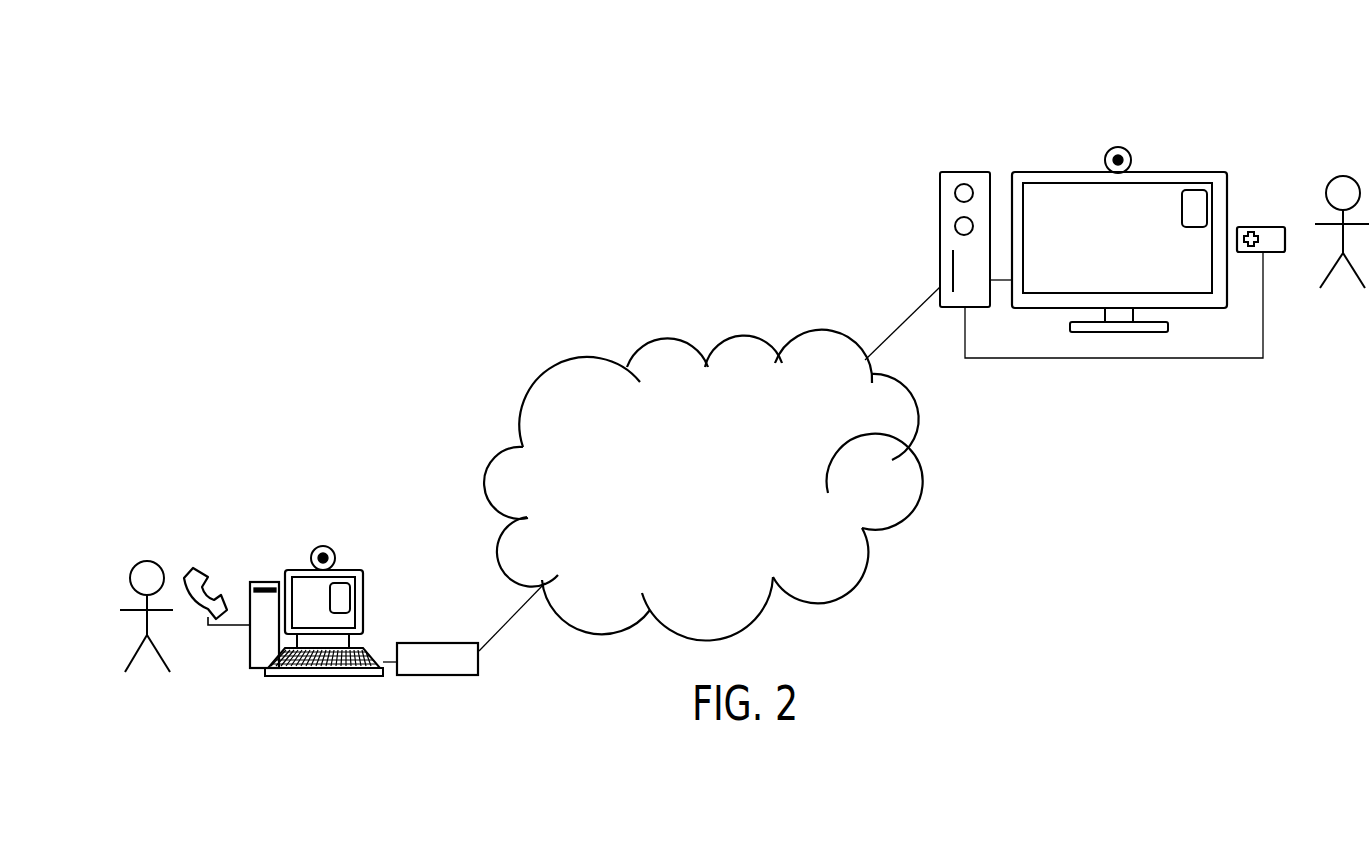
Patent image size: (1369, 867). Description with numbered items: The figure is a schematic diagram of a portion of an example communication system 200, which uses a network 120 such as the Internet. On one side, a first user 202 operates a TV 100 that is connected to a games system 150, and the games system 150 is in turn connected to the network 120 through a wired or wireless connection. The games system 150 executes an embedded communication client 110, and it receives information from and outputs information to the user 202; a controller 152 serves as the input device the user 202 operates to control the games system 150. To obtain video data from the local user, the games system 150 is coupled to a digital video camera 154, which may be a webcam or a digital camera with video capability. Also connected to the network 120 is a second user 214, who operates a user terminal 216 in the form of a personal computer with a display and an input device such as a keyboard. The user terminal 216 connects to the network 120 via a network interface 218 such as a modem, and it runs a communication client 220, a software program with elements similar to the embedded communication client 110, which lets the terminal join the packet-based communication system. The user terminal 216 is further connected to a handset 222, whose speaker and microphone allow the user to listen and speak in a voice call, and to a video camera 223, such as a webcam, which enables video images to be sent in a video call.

The communication system 200 is at (480, 296).
The network 120 is at (918, 486).
The games system 150 is at (965, 172).
The TV 100 is at (1042, 172).
The digital video camera 154 is at (1118, 147).
The embedded communication client 110 is at (1196, 190).
The controller 152 is at (1263, 227).
The first user 202 is at (1343, 176).
The second user 214 is at (147, 561).
The handset 222 is at (206, 568).
The user terminal 216 is at (291, 571).
The video camera 223 is at (330, 547).
The communication client 220 is at (352, 591).
The network interface 218 is at (435, 643).